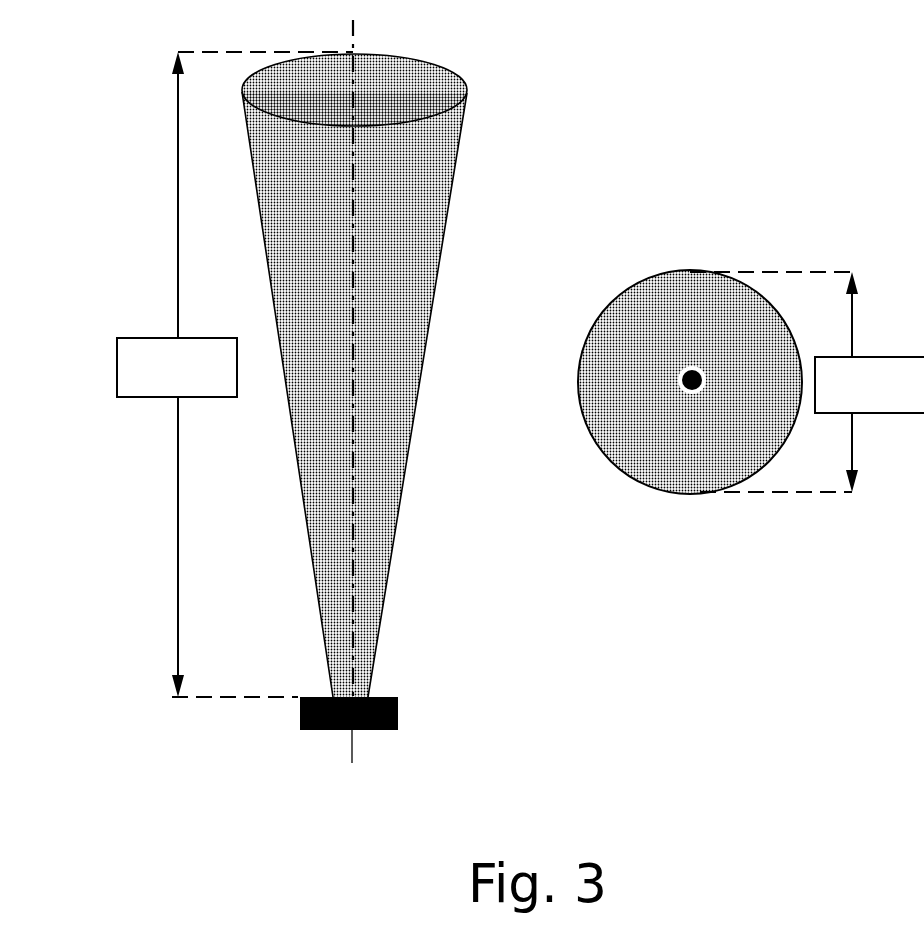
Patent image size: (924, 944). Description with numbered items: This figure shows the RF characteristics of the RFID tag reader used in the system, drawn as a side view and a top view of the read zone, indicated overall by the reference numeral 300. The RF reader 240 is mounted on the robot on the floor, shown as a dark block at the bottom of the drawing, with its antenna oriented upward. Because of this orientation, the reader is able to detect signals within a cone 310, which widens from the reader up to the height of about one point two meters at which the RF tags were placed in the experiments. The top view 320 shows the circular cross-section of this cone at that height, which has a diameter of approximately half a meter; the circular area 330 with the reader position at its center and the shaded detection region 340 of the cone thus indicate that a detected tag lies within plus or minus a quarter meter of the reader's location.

The RF reader read zone diagram 300 is at (520, 438).
The cone 310 is at (362, 438).
The top view 320 is at (740, 439).
The read zone circular cross-section 330 is at (679, 382).
The conical read zone 340 is at (379, 364).
The RF reader 240 is at (492, 674).